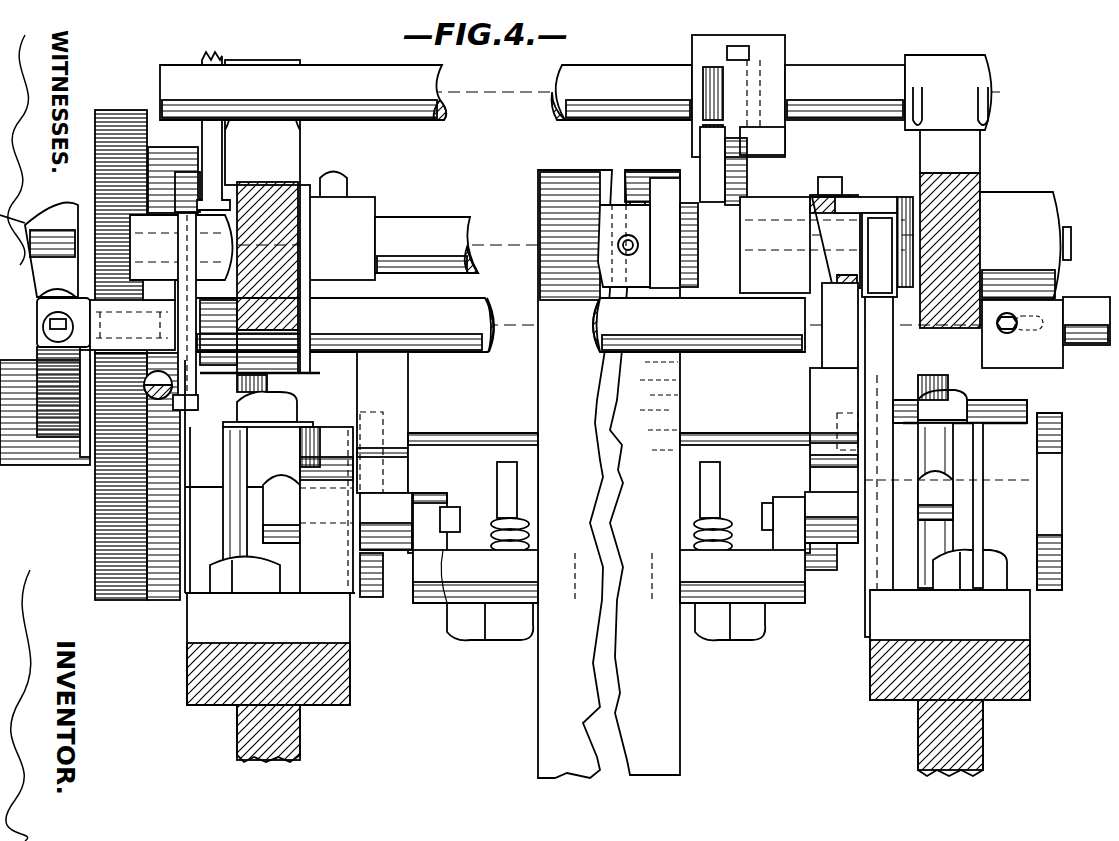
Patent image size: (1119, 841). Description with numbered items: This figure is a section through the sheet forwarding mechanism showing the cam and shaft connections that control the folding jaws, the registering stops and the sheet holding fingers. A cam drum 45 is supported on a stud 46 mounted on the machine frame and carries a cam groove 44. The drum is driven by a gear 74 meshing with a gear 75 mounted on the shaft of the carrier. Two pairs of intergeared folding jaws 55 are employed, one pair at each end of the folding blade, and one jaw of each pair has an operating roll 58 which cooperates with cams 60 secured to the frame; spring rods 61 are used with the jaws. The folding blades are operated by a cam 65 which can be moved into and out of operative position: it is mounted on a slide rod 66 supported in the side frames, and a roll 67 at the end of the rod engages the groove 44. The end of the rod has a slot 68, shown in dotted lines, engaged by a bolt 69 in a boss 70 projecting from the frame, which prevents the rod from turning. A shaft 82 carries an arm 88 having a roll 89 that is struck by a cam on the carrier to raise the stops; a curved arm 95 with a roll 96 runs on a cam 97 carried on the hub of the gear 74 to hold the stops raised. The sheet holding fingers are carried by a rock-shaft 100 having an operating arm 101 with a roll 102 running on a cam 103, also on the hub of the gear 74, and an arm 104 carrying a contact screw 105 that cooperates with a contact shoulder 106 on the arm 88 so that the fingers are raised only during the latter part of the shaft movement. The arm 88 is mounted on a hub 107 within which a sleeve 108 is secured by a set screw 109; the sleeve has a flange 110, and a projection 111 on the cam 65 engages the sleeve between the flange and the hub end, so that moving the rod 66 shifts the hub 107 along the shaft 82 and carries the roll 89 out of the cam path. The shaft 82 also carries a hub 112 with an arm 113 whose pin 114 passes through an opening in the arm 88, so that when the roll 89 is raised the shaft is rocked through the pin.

The cam groove 44 is at (77, 217).
The cam drum 45 is at (45, 381).
The stud 46 is at (147, 317).
The folding jaws 55 is at (609, 595).
The operating roll 58 is at (609, 544).
The cams 60 is at (607, 422).
The spring rods 61 is at (507, 492).
The cam 65 is at (857, 460).
The slide rod 66 is at (500, 325).
The roll 67 is at (60, 292).
The slot 68 is at (1020, 322).
The bolt 69 is at (1011, 332).
The boss 70 is at (1055, 330).
The gear 74 is at (110, 407).
The gear 75 is at (117, 493).
The shaft 82 is at (304, 226).
The arm 88 is at (748, 238).
The roll 89 is at (710, 160).
The curved arm 95 is at (192, 327).
The roll 96 is at (187, 432).
The cam 97 is at (159, 339).
The rock-shaft 100 is at (426, 92).
The operating arm 101 is at (212, 155).
The roll 102 is at (182, 193).
The cam 103 is at (183, 157).
The arm 104 is at (783, 87).
The contact screw 105 is at (727, 52).
The contact shoulder 106 is at (786, 137).
The hub 107 is at (778, 205).
The sleeve 108 is at (872, 213).
The set screw 109 is at (837, 183).
The flange 110 is at (905, 197).
The projection 111 is at (885, 255).
The hub 112 is at (605, 247).
The arm 113 is at (685, 233).
The pin 114 is at (653, 168).